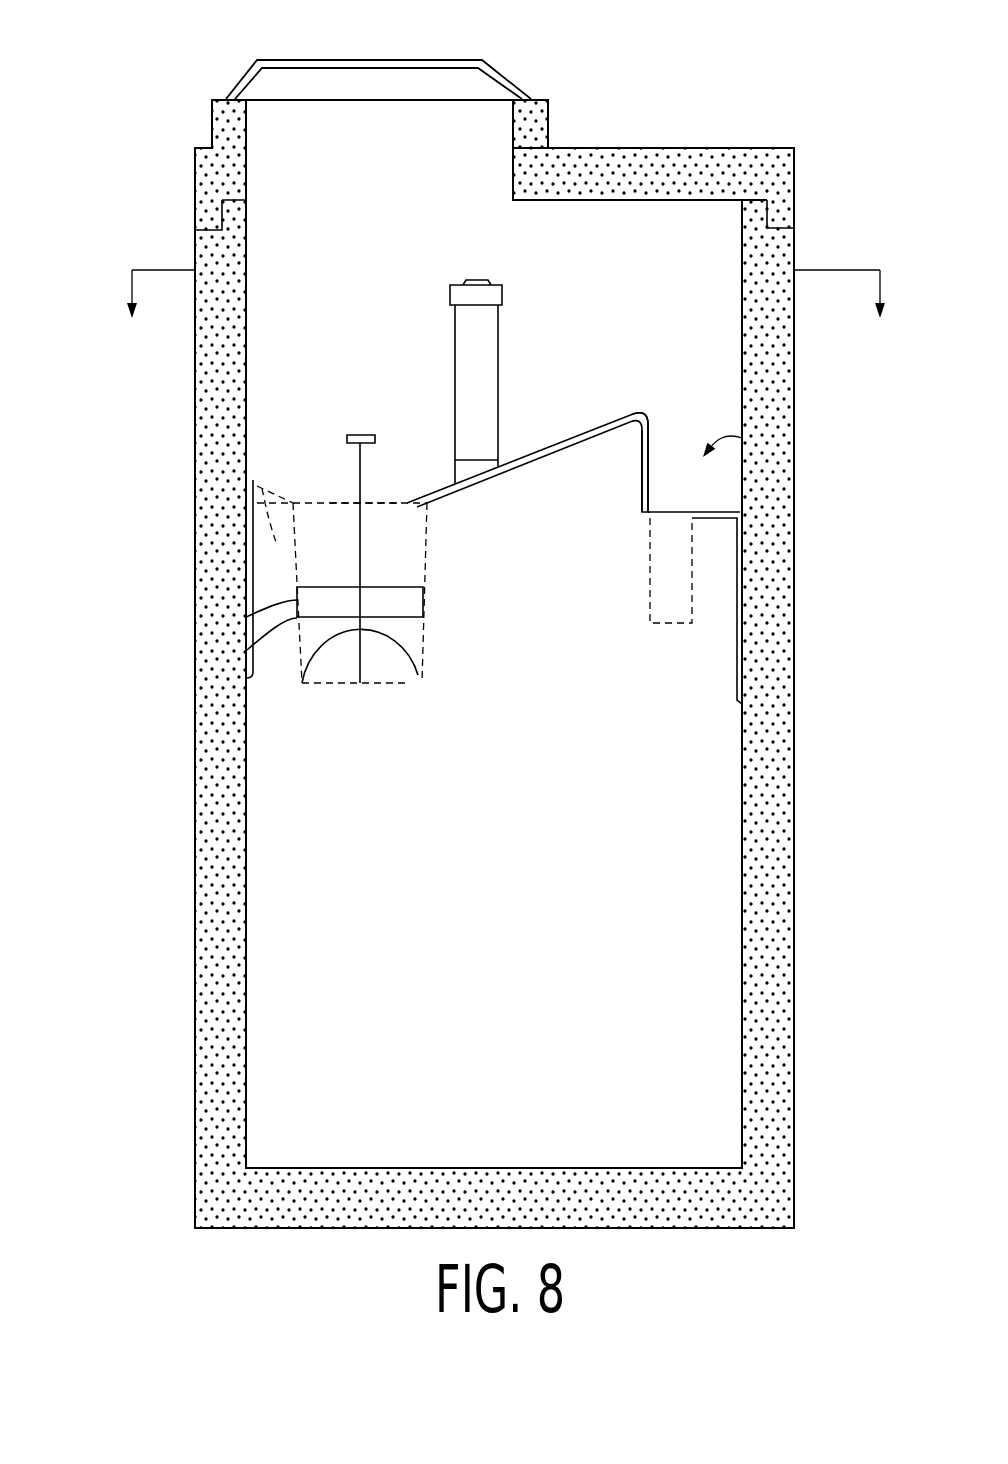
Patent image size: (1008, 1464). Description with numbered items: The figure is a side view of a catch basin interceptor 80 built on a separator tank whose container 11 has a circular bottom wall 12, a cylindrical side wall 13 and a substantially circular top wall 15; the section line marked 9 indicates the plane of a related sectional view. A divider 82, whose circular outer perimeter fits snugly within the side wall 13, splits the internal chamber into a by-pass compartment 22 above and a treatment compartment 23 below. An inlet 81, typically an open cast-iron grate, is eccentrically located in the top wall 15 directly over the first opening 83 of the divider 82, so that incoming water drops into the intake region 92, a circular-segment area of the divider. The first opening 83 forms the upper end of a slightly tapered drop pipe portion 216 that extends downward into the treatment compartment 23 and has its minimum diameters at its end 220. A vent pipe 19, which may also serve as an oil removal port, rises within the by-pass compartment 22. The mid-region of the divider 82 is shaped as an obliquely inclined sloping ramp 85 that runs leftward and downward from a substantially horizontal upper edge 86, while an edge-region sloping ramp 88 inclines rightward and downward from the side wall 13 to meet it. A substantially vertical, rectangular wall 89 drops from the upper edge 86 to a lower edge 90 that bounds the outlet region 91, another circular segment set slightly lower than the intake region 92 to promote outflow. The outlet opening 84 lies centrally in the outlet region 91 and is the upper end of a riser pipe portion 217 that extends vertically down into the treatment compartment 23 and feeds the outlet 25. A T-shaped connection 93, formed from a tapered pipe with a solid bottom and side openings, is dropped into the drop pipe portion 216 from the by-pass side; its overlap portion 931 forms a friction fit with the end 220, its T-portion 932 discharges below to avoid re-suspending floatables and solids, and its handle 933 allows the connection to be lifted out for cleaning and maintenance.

The catch basin interceptor 80 is at (112, 136).
The inlet 81 is at (356, 60).
The top wall 15 is at (760, 148).
The container 11 is at (195, 960).
The side wall 13 is at (795, 885).
The bottom wall 12 is at (697, 1167).
The outlet 25 is at (794, 478).
The end of drop pipe portion 220 is at (195, 685).
The outlet region 91 is at (794, 428).
The section line 9 is at (506, 291).
The by-pass compartment 22 is at (397, 232).
The treatment compartment 23 is at (493, 943).
The vent pipe 19 is at (499, 340).
The sloping ramp 85 is at (555, 442).
The upper edge 86 is at (640, 413).
The lower edge 90 is at (653, 510).
The vertical wall 89 is at (640, 512).
The divider 82 is at (553, 478).
The outlet opening 84 is at (678, 508).
The riser pipe portion 217 is at (688, 623).
The intake region 92 is at (362, 398).
The drop pipe portion 216 is at (427, 545).
The handle 933 is at (352, 434).
The T-shaped connection 93 is at (422, 637).
The T-portion 932 is at (418, 675).
The first opening 83 is at (333, 502).
The sloping ramp 88 is at (275, 535).
The overlap portion 931 is at (195, 636).